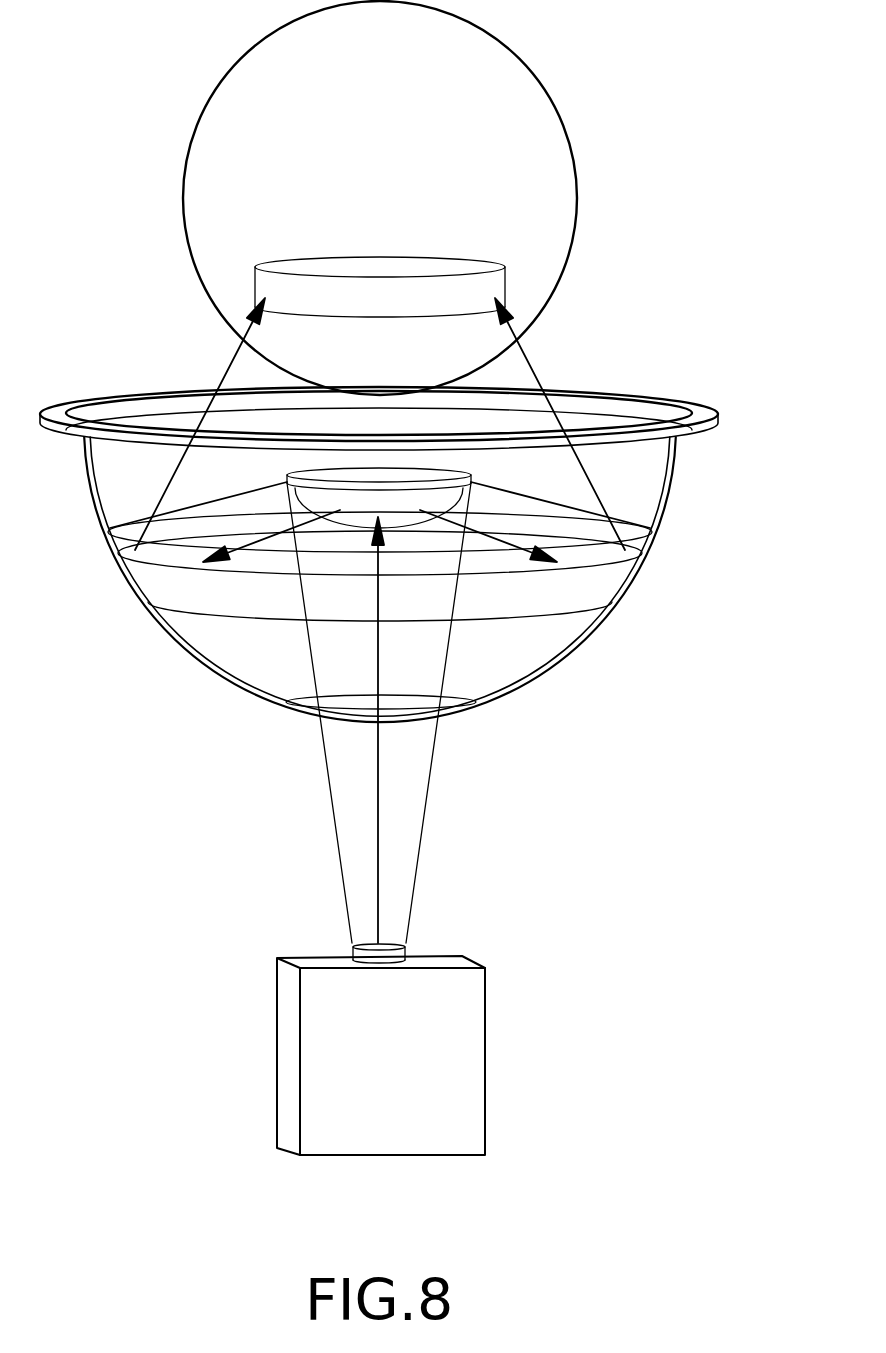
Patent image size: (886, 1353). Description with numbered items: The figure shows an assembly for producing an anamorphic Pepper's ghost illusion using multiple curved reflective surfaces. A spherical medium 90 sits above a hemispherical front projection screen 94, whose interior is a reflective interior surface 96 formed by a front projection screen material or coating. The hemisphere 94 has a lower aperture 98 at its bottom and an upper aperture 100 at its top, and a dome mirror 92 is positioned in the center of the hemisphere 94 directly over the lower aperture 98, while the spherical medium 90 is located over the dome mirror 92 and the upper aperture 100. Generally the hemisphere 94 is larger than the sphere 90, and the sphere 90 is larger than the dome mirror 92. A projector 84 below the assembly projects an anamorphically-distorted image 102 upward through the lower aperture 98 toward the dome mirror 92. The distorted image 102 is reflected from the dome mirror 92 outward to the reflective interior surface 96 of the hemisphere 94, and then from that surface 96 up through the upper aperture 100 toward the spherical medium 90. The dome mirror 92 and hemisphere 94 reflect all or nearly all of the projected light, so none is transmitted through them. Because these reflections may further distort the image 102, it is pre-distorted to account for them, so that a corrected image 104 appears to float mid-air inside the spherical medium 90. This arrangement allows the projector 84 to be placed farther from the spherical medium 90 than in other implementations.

The projector 84 is at (487, 1000).
The spherical medium 90 is at (553, 100).
The dome mirror 92 is at (472, 477).
The hemispherical front projection screen 94 is at (682, 457).
The reflective interior surface 96 is at (667, 483).
The lower aperture 98 is at (480, 702).
The upper aperture 100 is at (698, 412).
The anamorphically-distorted image 102 is at (405, 815).
The corrected image 104 is at (433, 267).